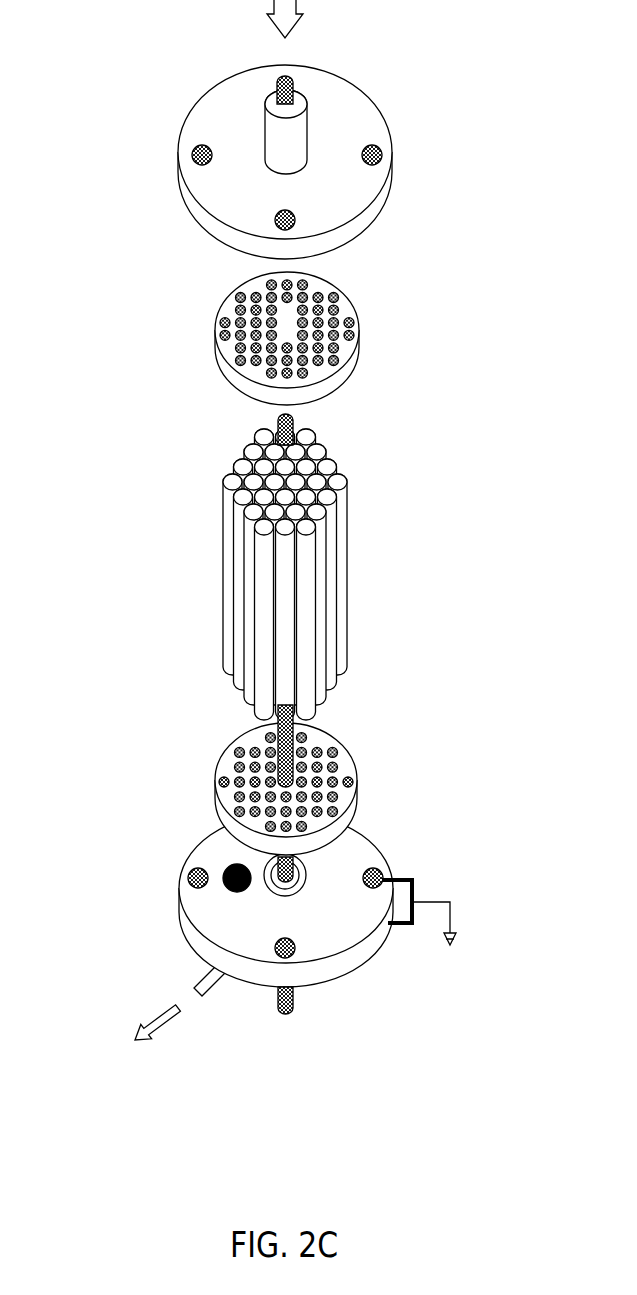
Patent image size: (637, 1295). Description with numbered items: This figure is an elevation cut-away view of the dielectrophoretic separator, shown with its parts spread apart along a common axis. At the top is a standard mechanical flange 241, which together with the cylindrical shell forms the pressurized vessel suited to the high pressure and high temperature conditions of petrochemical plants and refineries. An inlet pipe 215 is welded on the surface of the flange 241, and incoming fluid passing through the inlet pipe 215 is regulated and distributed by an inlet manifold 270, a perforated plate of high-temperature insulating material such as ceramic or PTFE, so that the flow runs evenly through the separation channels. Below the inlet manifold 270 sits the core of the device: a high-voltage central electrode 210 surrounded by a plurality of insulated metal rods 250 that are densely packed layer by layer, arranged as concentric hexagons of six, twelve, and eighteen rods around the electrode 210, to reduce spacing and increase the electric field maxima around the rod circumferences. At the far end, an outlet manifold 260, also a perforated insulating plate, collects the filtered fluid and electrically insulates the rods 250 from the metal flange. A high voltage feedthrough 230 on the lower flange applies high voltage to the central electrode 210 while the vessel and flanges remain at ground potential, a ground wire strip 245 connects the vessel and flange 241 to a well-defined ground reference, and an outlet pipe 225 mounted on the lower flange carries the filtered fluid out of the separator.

The high-voltage central electrode 210 is at (276, 432).
The inlet pipe 215 is at (266, 108).
The outlet pipe 225 is at (203, 982).
The high voltage feedthrough 230 is at (290, 887).
The mechanical flange 241 is at (197, 215).
The ground wire strip 245 is at (420, 883).
The insulated metal rods 250 is at (232, 567).
The outlet manifold 260 is at (343, 758).
The inlet manifold 270 is at (347, 373).